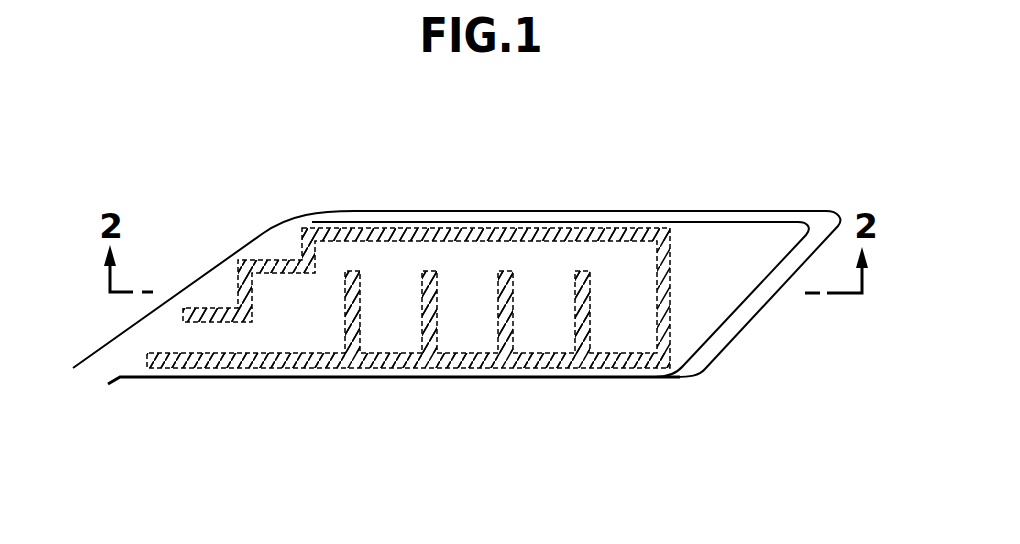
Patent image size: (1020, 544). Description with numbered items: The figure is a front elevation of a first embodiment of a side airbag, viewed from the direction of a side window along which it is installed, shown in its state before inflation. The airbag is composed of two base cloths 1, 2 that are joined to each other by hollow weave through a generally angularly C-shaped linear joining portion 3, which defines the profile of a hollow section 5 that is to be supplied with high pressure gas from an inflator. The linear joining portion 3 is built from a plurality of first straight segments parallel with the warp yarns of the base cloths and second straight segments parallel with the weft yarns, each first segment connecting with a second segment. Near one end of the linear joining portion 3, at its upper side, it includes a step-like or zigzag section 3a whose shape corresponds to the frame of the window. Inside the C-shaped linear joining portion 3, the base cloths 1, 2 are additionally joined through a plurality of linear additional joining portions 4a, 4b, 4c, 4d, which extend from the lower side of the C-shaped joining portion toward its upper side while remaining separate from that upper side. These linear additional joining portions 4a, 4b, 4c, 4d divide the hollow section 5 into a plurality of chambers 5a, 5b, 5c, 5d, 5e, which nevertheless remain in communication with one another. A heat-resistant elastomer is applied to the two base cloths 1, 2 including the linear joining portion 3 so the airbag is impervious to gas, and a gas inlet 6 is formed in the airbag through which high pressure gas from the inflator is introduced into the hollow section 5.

The base cloth 1 is at (775, 222).
The base cloth 2 is at (685, 210).
The linear joining portion 3 is at (672, 313).
The step-like section 3a is at (270, 260).
The linear additional joining portion 4a is at (352, 340).
The linear additional joining portion 4b is at (432, 340).
The linear additional joining portion 4c is at (510, 340).
The linear additional joining portion 4d is at (587, 340).
The hollow section 5 is at (472, 263).
The chamber 5a is at (280, 337).
The chamber 5b is at (397, 340).
The chamber 5c is at (473, 340).
The chamber 5d is at (550, 340).
The chamber 5e is at (625, 337).
The gas inlet 6 is at (100, 375).